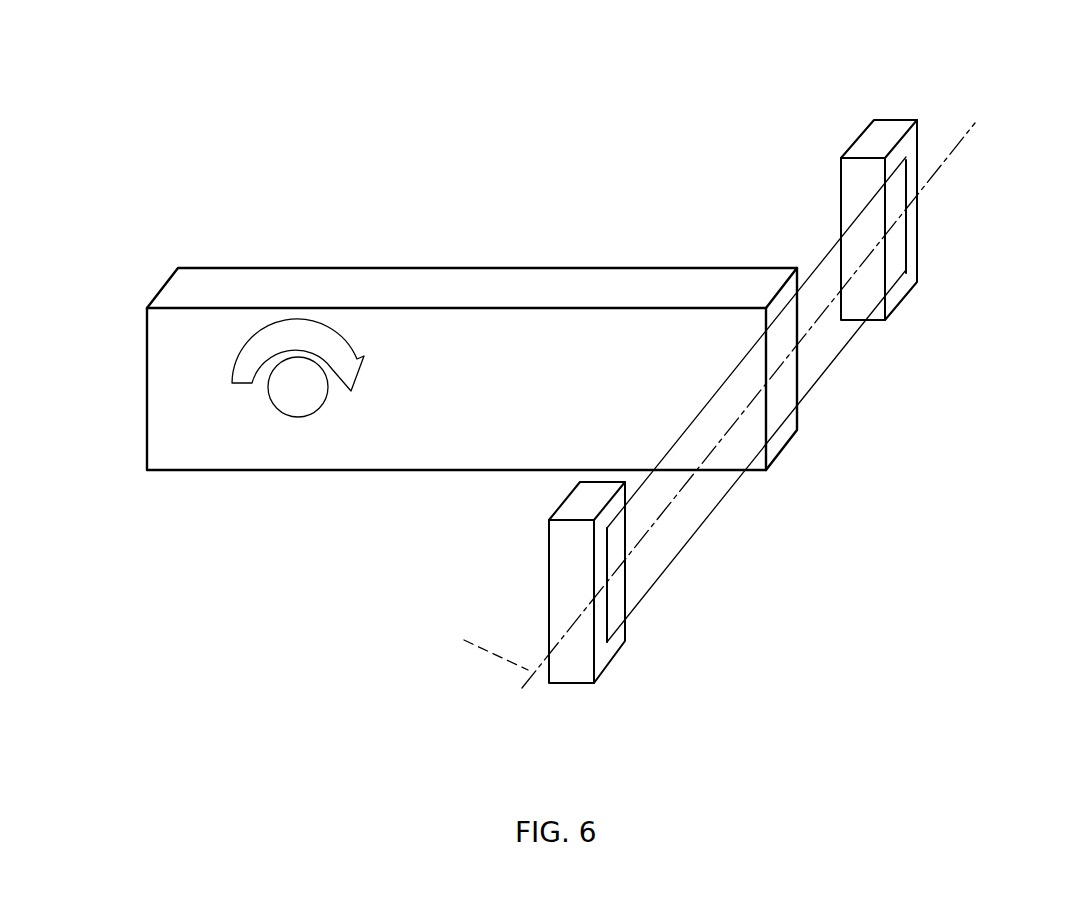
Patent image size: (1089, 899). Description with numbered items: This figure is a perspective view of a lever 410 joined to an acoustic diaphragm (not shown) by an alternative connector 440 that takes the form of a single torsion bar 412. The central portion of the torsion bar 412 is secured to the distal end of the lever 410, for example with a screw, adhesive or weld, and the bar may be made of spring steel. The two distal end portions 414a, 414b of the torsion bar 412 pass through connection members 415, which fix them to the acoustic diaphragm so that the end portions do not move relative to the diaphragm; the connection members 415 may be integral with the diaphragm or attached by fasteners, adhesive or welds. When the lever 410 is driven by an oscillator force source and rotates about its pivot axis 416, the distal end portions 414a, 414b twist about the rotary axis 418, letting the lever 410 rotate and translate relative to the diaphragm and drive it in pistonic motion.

The lever 410 is at (537, 285).
The torsion bar 412 is at (835, 341).
The distal end portion 414a is at (626, 641).
The distal end portion 414b is at (912, 292).
The connection member 415 is at (875, 120).
The pivot axis 416 is at (272, 402).
The rotary axis 418 is at (464, 640).
The connector 440 is at (820, 239).